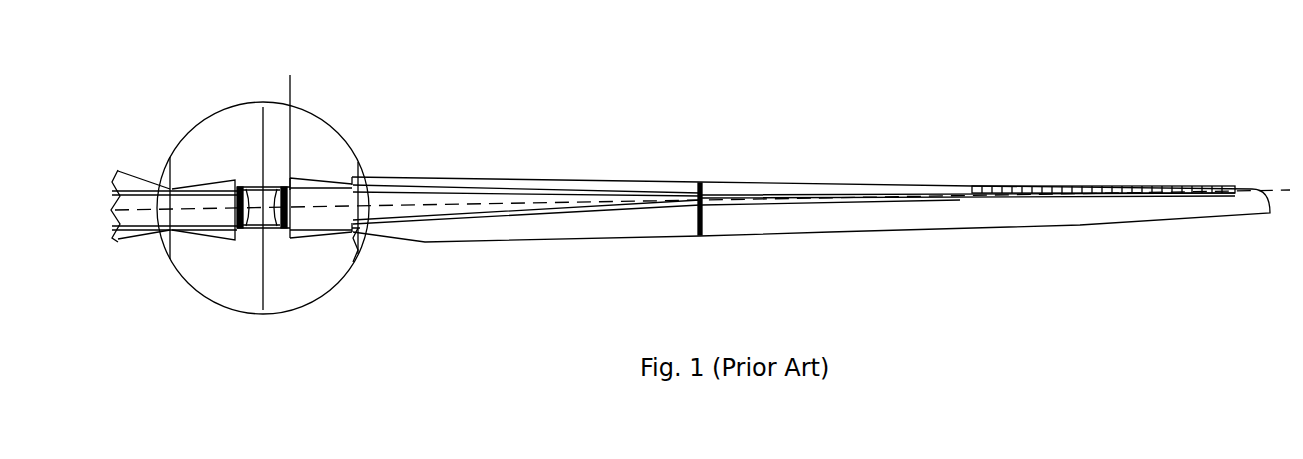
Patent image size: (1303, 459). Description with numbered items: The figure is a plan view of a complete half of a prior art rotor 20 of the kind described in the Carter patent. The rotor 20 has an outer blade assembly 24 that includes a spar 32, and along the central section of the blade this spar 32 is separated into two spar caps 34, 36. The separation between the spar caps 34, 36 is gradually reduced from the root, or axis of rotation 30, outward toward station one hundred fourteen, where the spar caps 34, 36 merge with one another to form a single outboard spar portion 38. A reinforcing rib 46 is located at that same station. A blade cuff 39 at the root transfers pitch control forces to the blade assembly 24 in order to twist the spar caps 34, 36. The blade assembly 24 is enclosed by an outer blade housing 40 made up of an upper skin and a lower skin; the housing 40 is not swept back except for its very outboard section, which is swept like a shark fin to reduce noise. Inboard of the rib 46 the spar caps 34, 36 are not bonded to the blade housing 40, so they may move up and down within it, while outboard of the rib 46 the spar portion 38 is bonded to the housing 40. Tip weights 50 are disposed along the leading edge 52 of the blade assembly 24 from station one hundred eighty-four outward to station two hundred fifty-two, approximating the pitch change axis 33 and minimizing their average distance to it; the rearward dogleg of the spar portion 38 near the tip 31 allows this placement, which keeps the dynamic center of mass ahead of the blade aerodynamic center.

The rotor 20 is at (882, 242).
The outer blade assembly 24 is at (557, 180).
The axis of rotation 30 is at (262, 203).
The tip 31 is at (1094, 217).
The spar 32 is at (753, 197).
The pitch change axis 33 is at (408, 215).
The spar cap 34 is at (427, 190).
The spar cap 36 is at (483, 200).
The outboard spar portion 38 is at (785, 205).
The blade cuff 39 is at (305, 234).
The outer blade housing 40 is at (582, 243).
The reinforcing rib 46 is at (698, 230).
The tip weights 50 is at (958, 130).
The leading edge 52 is at (797, 182).